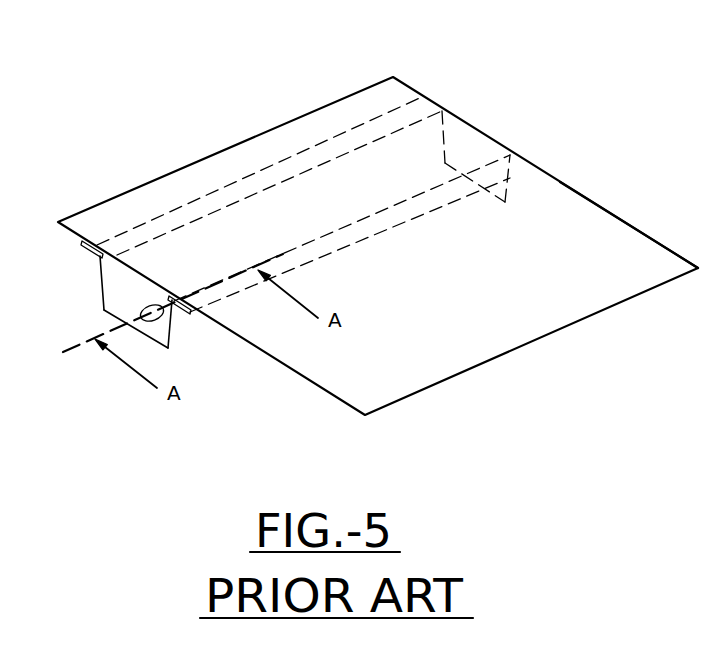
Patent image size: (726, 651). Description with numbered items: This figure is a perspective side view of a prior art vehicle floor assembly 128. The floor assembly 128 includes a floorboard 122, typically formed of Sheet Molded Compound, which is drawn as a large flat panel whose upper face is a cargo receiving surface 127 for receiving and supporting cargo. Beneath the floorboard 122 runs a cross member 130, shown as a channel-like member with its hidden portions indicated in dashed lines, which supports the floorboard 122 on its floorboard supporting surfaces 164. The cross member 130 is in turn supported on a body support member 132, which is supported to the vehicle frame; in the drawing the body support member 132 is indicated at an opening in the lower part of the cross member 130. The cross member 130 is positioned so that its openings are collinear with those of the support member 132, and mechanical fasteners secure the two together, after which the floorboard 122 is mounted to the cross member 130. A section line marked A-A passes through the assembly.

The floorboard 122 is at (538, 190).
The cargo receiving surface 127 is at (599, 237).
The floor assembly 128 is at (480, 85).
The cross member 130 is at (183, 310).
The body support member 132 is at (150, 320).
The floorboard supporting surface 164 is at (97, 254).